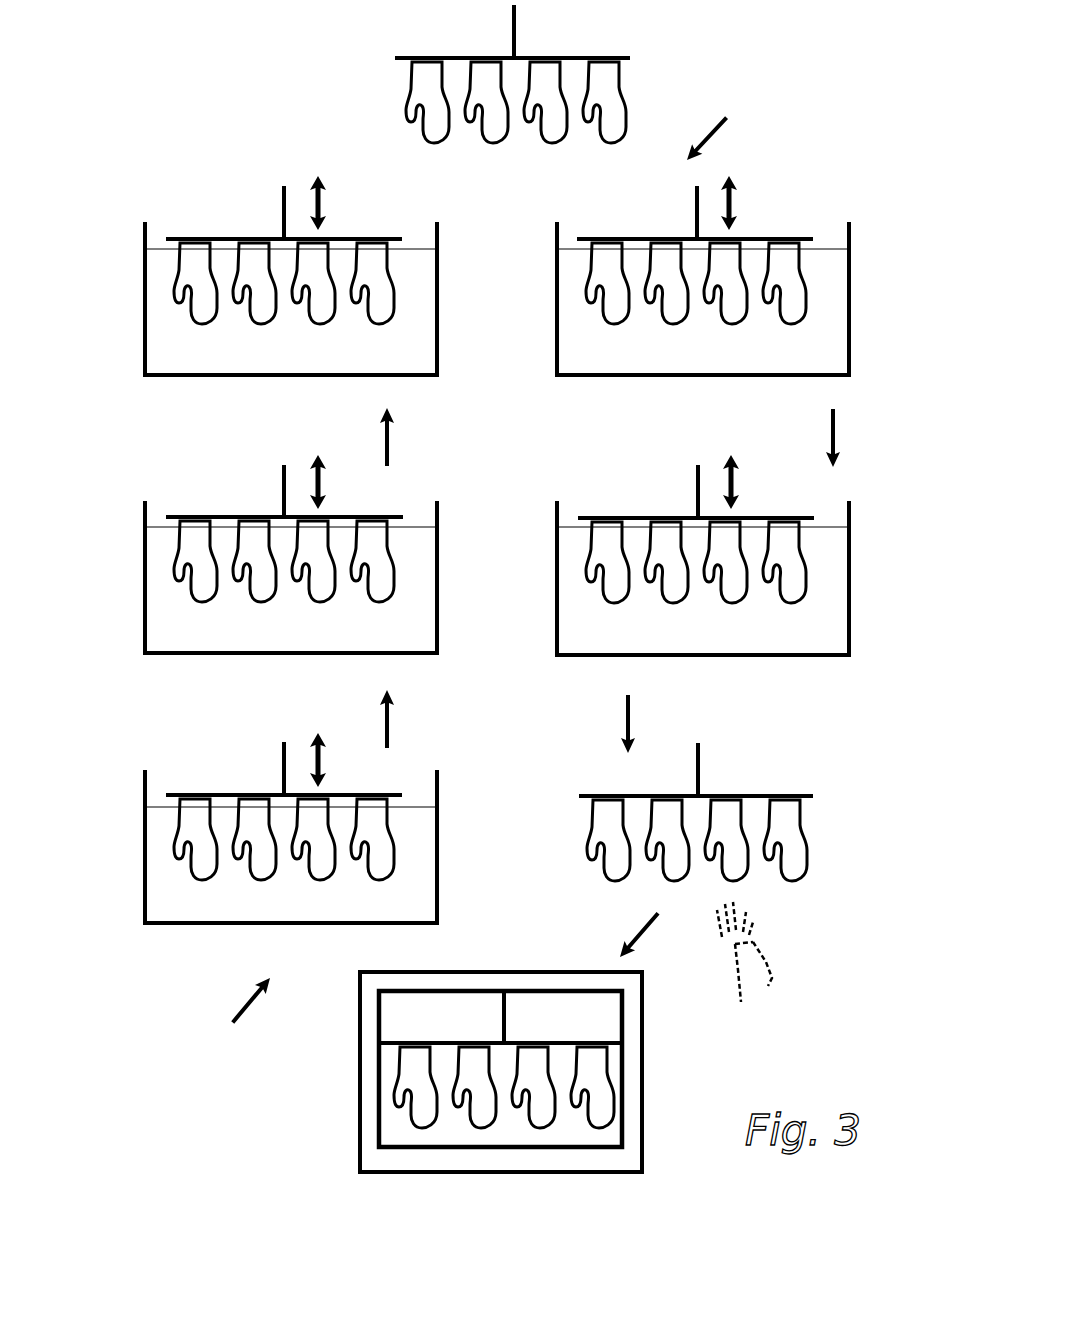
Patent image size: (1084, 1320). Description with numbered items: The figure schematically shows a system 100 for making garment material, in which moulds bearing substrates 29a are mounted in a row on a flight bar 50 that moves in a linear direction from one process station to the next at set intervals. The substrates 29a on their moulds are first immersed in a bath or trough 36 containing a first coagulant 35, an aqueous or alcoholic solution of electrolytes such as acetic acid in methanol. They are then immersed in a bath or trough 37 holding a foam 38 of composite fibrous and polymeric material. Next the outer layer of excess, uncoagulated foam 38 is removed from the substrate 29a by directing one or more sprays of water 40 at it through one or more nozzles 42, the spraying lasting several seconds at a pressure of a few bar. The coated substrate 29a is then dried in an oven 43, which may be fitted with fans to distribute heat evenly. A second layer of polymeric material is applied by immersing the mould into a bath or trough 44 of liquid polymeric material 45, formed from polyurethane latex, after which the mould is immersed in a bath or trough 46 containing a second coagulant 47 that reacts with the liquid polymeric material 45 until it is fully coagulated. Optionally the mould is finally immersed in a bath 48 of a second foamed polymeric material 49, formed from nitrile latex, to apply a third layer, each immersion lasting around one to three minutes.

The flight bar 50 is at (520, 43).
The substrate 29a is at (623, 100).
The bath of second foamed polymeric material 48 is at (145, 222).
The second foamed polymeric material 49 is at (225, 360).
The bath or trough of first coagulant 36 is at (557, 222).
The first coagulant 35 is at (733, 362).
The bath or trough of second coagulant 46 is at (147, 507).
The second coagulant 47 is at (221, 642).
The bath or trough of foam 37 is at (558, 503).
The foam 38 is at (728, 640).
The bath or trough of liquid polymeric material 44 is at (148, 778).
The liquid polymeric material 45 is at (230, 910).
The spray of water 40 is at (758, 935).
The nozzle 42 is at (775, 972).
The oven 43 is at (642, 1105).
The system 100 is at (513, 567).